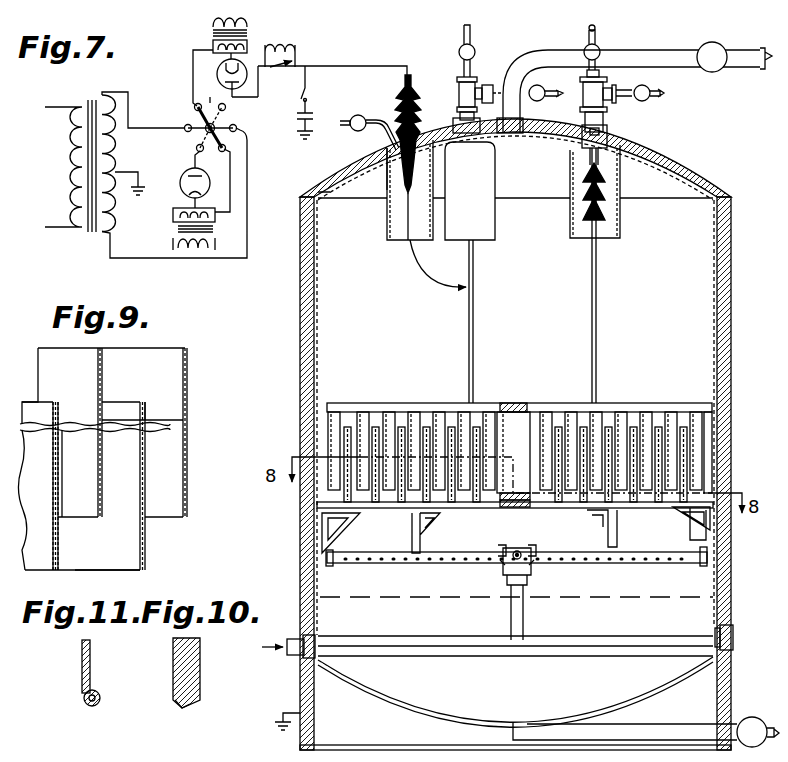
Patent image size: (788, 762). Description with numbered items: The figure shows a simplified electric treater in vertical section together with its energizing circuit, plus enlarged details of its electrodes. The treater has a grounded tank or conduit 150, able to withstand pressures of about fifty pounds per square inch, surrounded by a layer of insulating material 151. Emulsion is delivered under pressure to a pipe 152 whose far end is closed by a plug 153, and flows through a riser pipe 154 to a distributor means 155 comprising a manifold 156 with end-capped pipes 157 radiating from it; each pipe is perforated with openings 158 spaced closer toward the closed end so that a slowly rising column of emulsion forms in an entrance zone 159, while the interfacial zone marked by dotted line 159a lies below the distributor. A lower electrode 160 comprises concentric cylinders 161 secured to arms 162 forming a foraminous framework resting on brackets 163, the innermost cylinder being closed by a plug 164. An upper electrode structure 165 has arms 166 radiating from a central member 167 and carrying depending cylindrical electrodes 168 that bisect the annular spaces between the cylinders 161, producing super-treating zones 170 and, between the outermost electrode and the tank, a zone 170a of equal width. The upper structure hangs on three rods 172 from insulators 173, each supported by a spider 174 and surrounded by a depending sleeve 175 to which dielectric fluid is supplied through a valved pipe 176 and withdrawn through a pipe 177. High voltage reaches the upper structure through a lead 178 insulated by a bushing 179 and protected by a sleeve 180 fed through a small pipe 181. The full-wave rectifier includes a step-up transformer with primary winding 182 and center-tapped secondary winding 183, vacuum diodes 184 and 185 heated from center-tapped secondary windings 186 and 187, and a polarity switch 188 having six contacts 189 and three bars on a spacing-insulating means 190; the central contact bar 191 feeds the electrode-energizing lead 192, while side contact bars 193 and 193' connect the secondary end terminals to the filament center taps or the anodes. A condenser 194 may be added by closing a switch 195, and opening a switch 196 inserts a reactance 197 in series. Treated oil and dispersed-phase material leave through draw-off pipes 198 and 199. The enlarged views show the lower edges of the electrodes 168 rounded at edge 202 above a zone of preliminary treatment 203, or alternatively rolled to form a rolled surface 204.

In FIG. 7, the tank or conduit 150 is at (722, 262).
In FIG. 7, the layer of insulating material 151 is at (723, 313).
In FIG. 7, the pipe 152 is at (293, 655).
In FIG. 7, the plug 153 is at (733, 640).
In FIG. 7, the riser pipe 154 is at (523, 620).
In FIG. 7, the distributor means 155 is at (541, 572).
In FIG. 7, the manifold 156 is at (503, 573).
In FIG. 7, the end-capped pipes 157 is at (440, 563).
In FIG. 7, the openings 158 is at (405, 565).
In FIG. 7, the entrance zone 159 is at (693, 537).
In FIG. 7, the interfacial zone 159a is at (630, 596).
In FIG. 7, the lower electrode 160 is at (699, 460).
In FIG. 7, the concentric cylinders 161 is at (495, 500).
In FIG. 9, the concentric cylinders 161 is at (147, 535).
In FIG. 7, the arms 162 is at (627, 502).
In FIG. 7, the brackets 163 is at (348, 515).
In FIG. 7, the plug 164 is at (523, 500).
In FIG. 7, the upper electrode structure 165 is at (712, 406).
In FIG. 7, the arms 166 is at (622, 412).
In FIG. 7, the central member 167 is at (513, 403).
In FIG. 7, the depending cylindrical electrodes 168 is at (648, 412).
In FIG. 9, the depending cylindrical electrodes 168 is at (103, 382).
In FIG. 11, the depending cylindrical electrodes 168 is at (82, 652).
In FIG. 10, the depending cylindrical electrodes 168 is at (175, 652).
In FIG. 7, the super-treating zones 170 is at (581, 430).
In FIG. 9, the super-treating zones 170 is at (160, 453).
In FIG. 7, the super-treating zone 170a is at (708, 437).
In FIG. 7, the rods 172 is at (468, 327).
In FIG. 7, the insulators 173 is at (583, 213).
In FIG. 7, the spider 174 is at (580, 150).
In FIG. 7, the depending sleeve 175 is at (580, 177).
In FIG. 7, the valved pipe 176 is at (487, 86).
In FIG. 7, the pipe 177 is at (463, 40).
In FIG. 7, the lead 178 is at (418, 275).
In FIG. 7, the bushing 179 is at (387, 183).
In FIG. 7, the sleeve 180 is at (387, 222).
In FIG. 7, the pipe 181 is at (393, 120).
In FIG. 7, the primary winding 182 is at (67, 156).
In FIG. 7, the secondary winding 183 is at (100, 93).
In FIG. 7, the vacuum diode 184 is at (217, 70).
In FIG. 7, the vacuum diode 185 is at (183, 192).
In FIG. 7, the center-tapped secondary winding 186 is at (247, 37).
In FIG. 7, the center-tapped secondary winding 187 is at (175, 232).
In FIG. 7, the polarity switch 188 is at (228, 112).
In FIG. 7, the contacts 189 is at (194, 105).
In FIG. 7, the spacing-insulating means 190 is at (197, 140).
In FIG. 7, the central contact bar 191 is at (219, 150).
In FIG. 7, the electrode-energizing lead 192 is at (308, 84).
In FIG. 7, the side contact bar 193 is at (253, 129).
In FIG. 7, the side contact bar 193' is at (170, 119).
In FIG. 7, the condenser 194 is at (309, 114).
In FIG. 7, the switch 195 is at (306, 94).
In FIG. 7, the switch 196 is at (293, 62).
In FIG. 7, the reactance 197 is at (290, 50).
In FIG. 7, the draw-off pipe 198 is at (515, 58).
In FIG. 7, the draw-off pipe 199 is at (607, 735).
In FIG. 9, the rounded edge 202 is at (102, 518).
In FIG. 10, the rounded edge 202 is at (178, 706).
In FIG. 9, the zone of preliminary treatment 203 is at (113, 551).
In FIG. 11, the rolled surface 204 is at (84, 703).